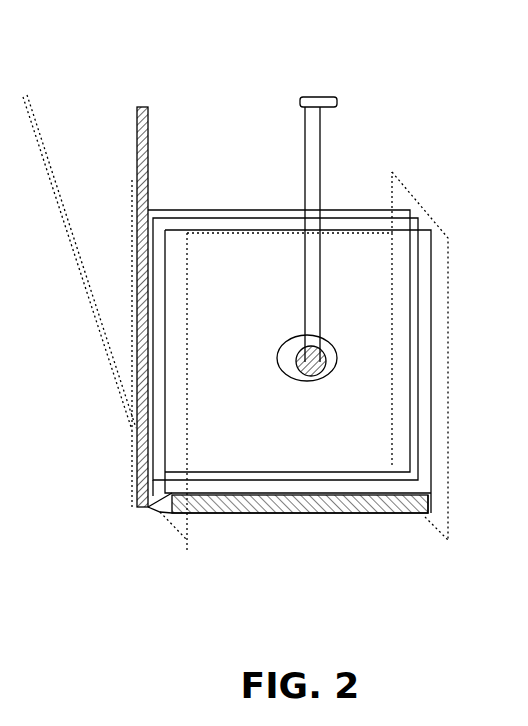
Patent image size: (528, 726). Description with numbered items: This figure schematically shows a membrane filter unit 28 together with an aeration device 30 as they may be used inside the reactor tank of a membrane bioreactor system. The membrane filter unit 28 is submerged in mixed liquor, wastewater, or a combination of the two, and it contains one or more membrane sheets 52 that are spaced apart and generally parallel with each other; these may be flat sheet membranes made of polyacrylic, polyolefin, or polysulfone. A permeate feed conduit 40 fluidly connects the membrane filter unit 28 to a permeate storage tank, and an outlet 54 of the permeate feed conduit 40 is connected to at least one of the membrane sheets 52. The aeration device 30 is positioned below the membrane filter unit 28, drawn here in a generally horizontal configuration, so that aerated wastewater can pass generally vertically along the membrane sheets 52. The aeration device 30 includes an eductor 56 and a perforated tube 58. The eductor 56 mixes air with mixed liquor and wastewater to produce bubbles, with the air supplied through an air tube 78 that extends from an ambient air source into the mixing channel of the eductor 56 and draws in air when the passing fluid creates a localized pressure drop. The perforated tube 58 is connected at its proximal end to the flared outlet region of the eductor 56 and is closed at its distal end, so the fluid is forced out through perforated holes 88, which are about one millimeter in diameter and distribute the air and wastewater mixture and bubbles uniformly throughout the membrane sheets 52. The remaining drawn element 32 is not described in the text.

The membrane filter unit 28 is at (431, 120).
The aeration device 30 is at (236, 548).
The housing wall 32 is at (137, 127).
The permeate feed conduit 40 is at (320, 128).
The membrane sheets 52 is at (252, 232).
The outlet 54 is at (305, 378).
The eductor 56 is at (163, 514).
The perforated tube 58 is at (388, 515).
The air tube 78 is at (104, 338).
The perforated holes 88 is at (313, 514).